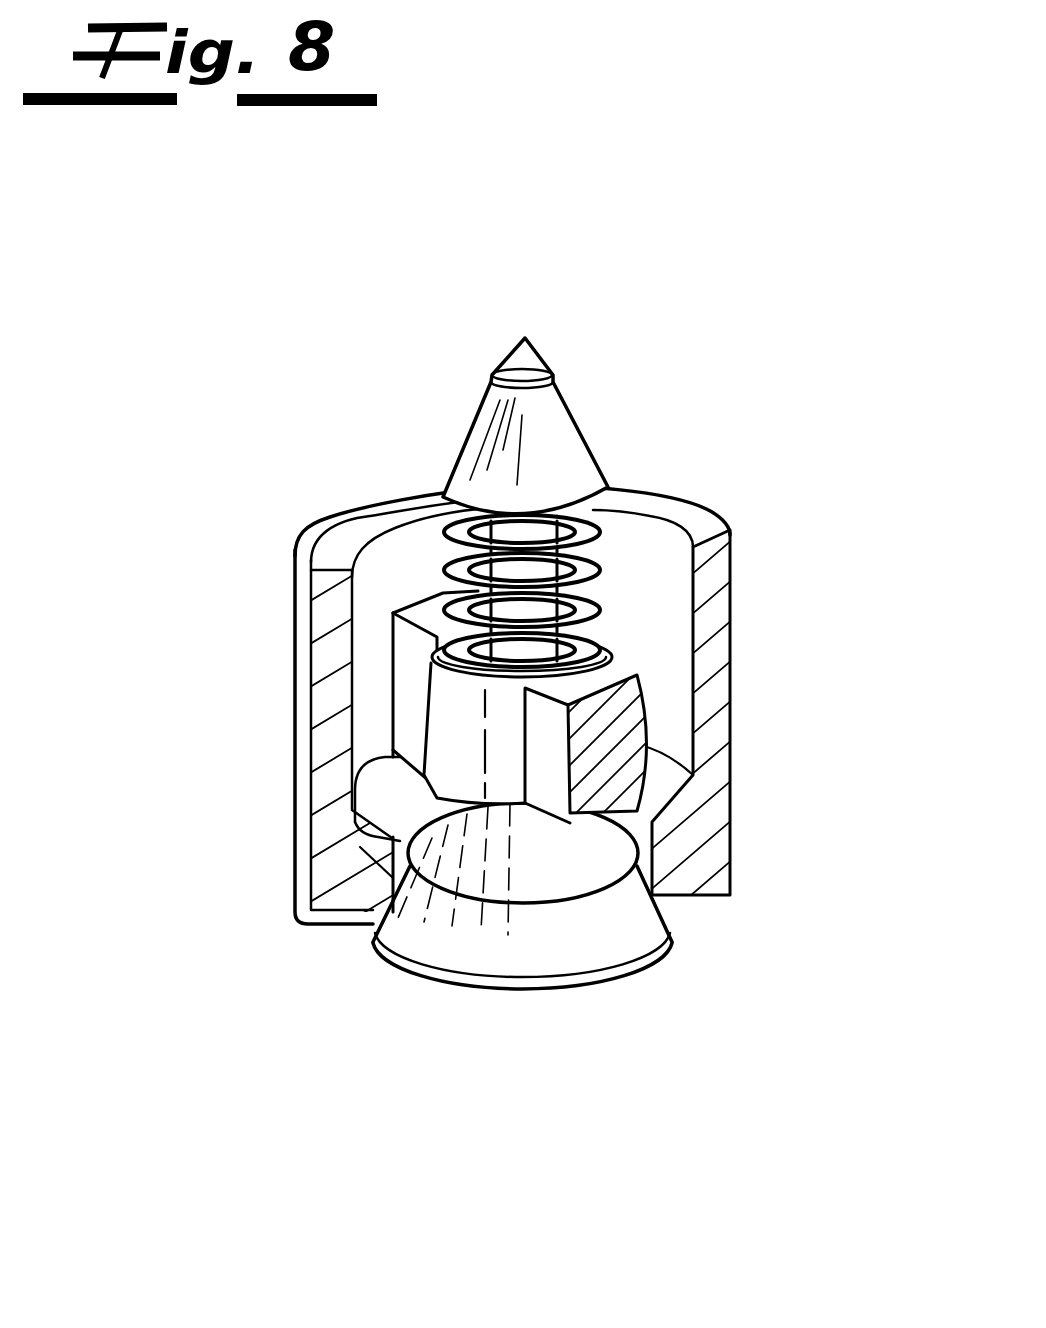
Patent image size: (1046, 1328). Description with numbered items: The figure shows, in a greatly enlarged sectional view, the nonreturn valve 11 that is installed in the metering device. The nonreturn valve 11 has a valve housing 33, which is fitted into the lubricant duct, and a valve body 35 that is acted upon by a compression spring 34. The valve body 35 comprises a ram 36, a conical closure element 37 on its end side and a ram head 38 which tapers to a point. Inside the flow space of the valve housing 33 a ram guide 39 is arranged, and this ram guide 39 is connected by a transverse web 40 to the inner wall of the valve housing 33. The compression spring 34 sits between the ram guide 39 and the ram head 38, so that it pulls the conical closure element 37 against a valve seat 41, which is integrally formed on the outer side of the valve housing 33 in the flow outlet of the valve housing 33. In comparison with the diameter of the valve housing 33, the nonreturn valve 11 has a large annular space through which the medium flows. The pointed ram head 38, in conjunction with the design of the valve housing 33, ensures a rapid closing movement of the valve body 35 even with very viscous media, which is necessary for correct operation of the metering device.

The nonreturn valve 11 is at (380, 1043).
The valve housing 33 is at (282, 794).
The compression spring 34 is at (593, 560).
The valve body 35 is at (538, 1020).
The ram 36 is at (530, 608).
The conical closure element 37 is at (617, 937).
The ram head 38 is at (568, 463).
The ram guide 39 is at (462, 718).
The transverse web 40 is at (420, 613).
The valve seat 41 is at (340, 911).